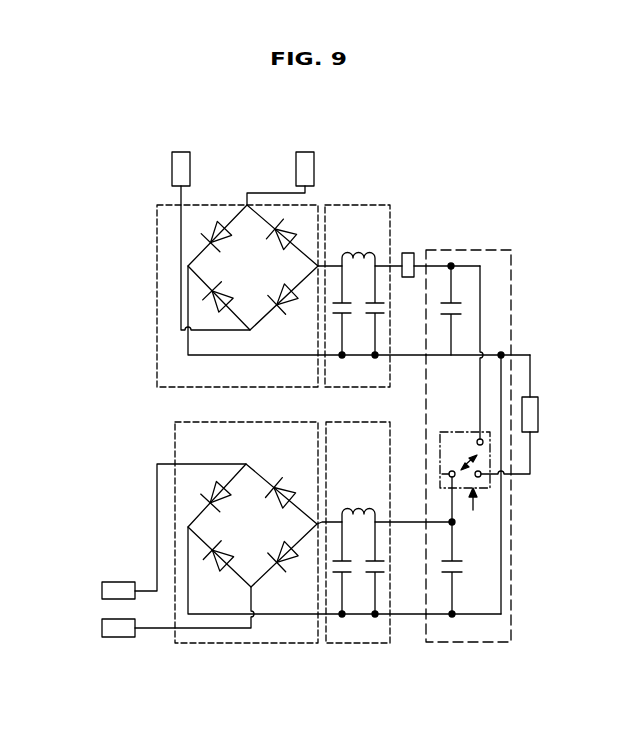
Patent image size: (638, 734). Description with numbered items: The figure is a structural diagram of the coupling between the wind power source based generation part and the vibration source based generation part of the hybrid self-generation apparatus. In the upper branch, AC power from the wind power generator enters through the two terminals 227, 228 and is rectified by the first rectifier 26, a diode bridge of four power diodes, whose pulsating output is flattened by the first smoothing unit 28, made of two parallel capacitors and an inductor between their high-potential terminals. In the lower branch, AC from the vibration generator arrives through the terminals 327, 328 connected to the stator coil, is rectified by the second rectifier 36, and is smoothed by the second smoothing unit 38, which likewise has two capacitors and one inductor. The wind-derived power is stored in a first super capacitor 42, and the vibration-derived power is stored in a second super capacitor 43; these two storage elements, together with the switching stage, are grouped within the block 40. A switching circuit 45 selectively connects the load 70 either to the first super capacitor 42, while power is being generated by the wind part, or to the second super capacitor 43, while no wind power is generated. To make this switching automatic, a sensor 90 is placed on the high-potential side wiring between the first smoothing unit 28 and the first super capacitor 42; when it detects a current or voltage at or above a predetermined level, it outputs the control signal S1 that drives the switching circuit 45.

The terminal 227 is at (181, 151).
The terminal 228 is at (304, 151).
The first rectifier 26 is at (217, 204).
The first smoothing unit 28 is at (353, 204).
The sensor 90 is at (408, 252).
The output switching unit 40 is at (489, 250).
The first super capacitor 42 is at (455, 300).
The load 70 is at (539, 412).
The switching circuit 45 is at (490, 482).
The control signal S1 is at (473, 516).
The second super capacitor 43 is at (460, 575).
The second rectifier 36 is at (248, 644).
The second smoothing unit 38 is at (358, 644).
The terminal 327 is at (101, 628).
The terminal 328 is at (101, 591).